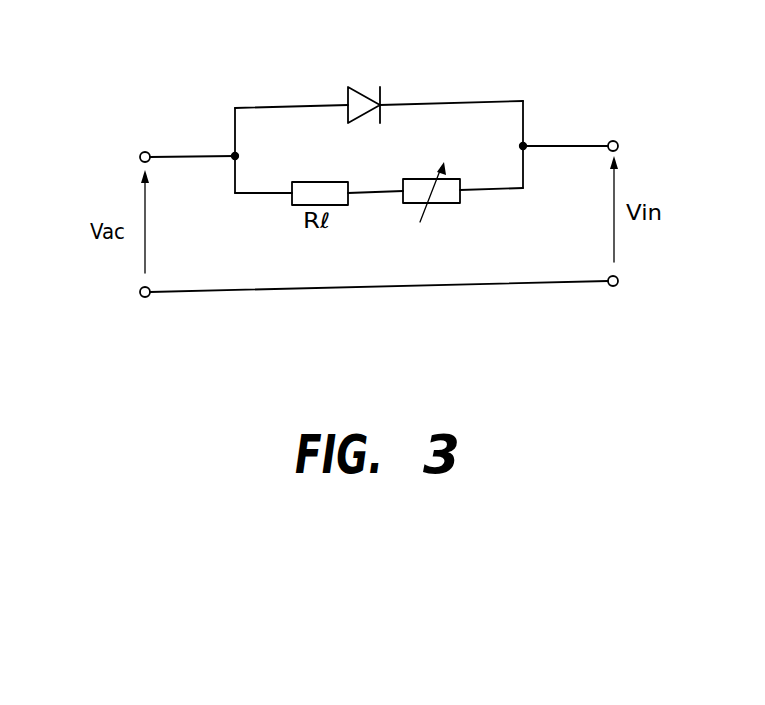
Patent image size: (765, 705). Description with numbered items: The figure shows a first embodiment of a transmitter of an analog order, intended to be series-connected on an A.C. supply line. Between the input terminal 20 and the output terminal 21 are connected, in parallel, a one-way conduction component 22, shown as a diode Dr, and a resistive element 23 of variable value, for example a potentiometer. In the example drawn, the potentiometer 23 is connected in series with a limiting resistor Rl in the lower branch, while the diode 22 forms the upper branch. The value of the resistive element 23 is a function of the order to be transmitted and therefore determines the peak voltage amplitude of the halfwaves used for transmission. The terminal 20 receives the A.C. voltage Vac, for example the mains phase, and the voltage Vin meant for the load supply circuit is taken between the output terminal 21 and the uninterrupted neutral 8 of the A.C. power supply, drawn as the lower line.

The uninterrupted neutral 8 is at (380, 288).
The input terminal 20 is at (147, 152).
The output terminal 21 is at (615, 139).
The one-way conduction component 22 is at (372, 92).
The resistive element of variable value 23 is at (439, 210).